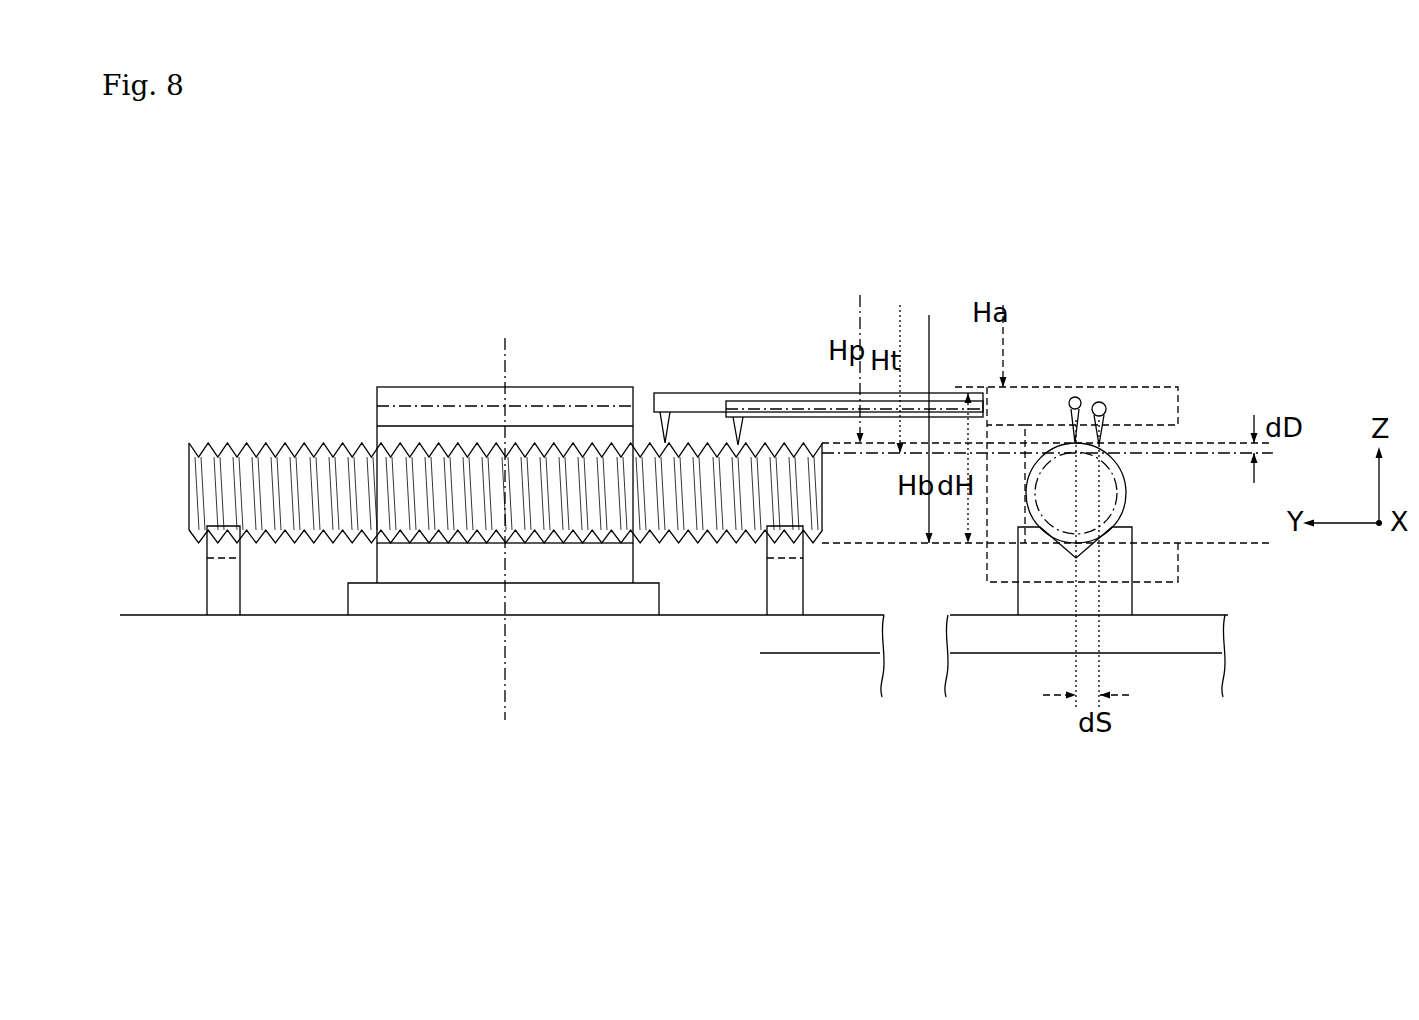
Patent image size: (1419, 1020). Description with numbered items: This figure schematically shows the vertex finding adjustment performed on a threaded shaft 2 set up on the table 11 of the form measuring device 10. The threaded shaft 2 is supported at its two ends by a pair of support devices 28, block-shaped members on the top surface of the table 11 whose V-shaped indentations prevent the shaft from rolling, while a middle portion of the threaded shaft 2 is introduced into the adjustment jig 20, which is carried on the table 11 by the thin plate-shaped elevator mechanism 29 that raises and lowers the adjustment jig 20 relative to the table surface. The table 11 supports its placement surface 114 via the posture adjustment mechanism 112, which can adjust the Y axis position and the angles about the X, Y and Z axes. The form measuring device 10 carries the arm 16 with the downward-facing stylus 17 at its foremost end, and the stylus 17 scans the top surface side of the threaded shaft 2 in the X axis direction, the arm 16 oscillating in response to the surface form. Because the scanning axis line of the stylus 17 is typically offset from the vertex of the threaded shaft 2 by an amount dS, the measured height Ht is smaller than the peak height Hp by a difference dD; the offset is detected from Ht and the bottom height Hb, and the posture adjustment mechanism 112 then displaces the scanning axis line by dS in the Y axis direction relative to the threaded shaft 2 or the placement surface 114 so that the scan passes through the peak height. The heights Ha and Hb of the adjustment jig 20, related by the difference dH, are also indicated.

The threaded shaft 2 is at (186, 482).
The form measuring device 10 is at (887, 316).
The table 11 is at (763, 694).
The arm 16 is at (763, 346).
The stylus 17 is at (700, 346).
The adjustment jig 20 is at (376, 374).
The support device 28 is at (238, 584).
The elevator mechanism 29 is at (553, 602).
The posture adjustment mechanism 112 is at (812, 653).
The placement surface 114 is at (728, 615).